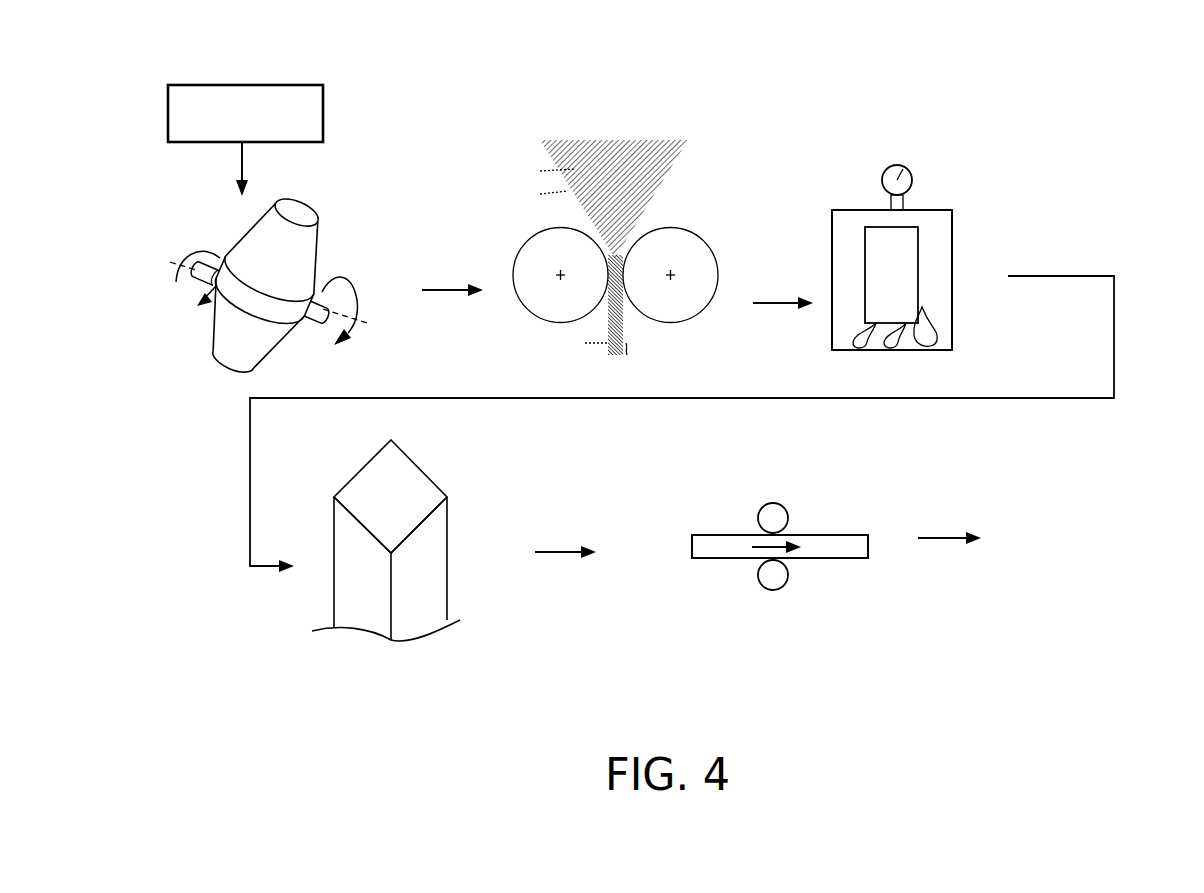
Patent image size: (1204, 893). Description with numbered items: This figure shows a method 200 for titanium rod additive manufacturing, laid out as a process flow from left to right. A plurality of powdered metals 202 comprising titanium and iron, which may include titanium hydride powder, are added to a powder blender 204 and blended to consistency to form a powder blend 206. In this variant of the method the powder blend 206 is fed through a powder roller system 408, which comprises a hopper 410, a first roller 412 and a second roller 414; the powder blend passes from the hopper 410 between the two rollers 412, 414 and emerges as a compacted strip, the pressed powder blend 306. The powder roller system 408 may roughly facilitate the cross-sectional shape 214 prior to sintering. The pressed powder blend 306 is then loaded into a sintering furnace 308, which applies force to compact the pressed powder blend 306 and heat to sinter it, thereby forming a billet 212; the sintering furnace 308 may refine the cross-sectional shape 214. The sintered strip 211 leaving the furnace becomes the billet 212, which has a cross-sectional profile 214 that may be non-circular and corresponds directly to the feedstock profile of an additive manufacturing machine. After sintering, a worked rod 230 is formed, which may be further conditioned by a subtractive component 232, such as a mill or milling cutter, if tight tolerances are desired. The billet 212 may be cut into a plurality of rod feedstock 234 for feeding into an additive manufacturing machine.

The powder metallurgy strip process 200 is at (1066, 74).
The powdered metals 202 is at (323, 95).
The powder blender 204 is at (303, 215).
The powder blend 206 is at (440, 288).
The powder roller system 408 is at (639, 224).
The hopper 410 is at (652, 206).
The first roller 412 is at (532, 255).
The second roller 414 is at (685, 253).
The pressed powder blend 306 is at (772, 303).
The sintering furnace 308 is at (953, 225).
The sintered strip transfer 211 is at (1114, 307).
The billet 212 is at (426, 595).
The cross-sectional profile 214 is at (393, 512).
The worked rod 230 is at (553, 550).
The subtractive component 232 is at (777, 512).
The rod feedstock 234 is at (937, 537).